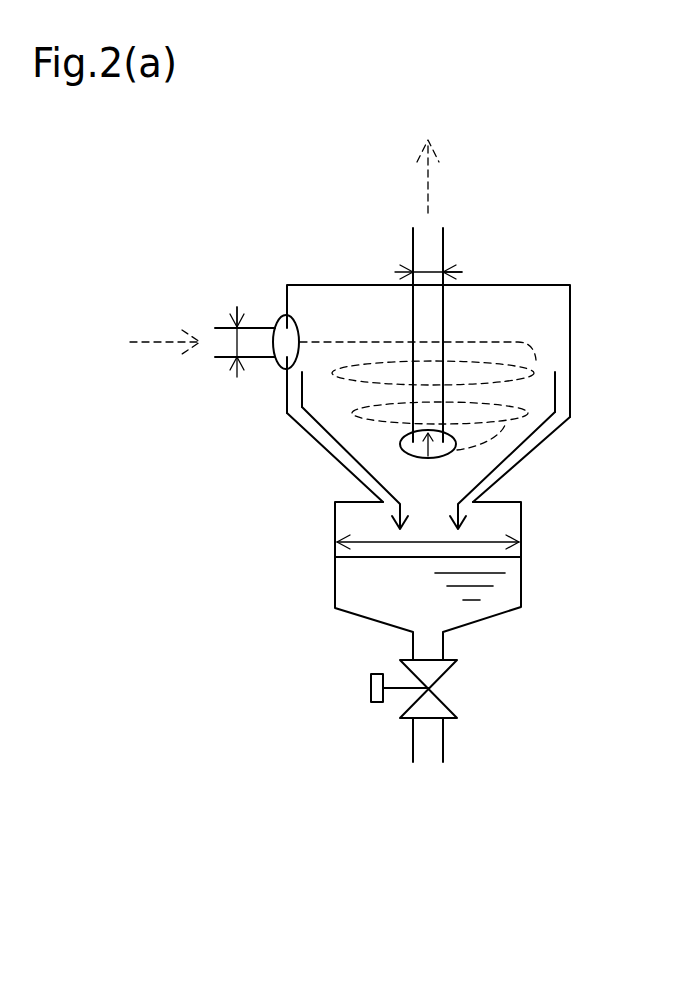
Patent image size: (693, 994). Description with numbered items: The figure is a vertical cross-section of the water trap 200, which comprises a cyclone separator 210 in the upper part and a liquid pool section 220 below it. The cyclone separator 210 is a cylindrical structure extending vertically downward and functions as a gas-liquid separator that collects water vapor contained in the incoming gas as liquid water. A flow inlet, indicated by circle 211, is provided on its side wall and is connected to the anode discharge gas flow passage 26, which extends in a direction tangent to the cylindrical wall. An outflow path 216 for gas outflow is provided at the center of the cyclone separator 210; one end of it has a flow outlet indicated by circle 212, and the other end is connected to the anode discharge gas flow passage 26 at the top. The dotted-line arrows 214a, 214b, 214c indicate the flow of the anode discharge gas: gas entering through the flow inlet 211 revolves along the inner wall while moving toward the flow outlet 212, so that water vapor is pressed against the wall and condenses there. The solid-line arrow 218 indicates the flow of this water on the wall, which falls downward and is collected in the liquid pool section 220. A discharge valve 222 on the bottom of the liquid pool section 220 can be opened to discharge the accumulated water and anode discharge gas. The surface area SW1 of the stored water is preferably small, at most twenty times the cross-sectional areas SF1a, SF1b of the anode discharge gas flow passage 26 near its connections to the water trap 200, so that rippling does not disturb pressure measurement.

The water trap 200 is at (214, 645).
The cyclone separator 210 is at (290, 425).
The flow inlet 211 is at (265, 357).
The flow outlet 212 is at (413, 458).
The arrow indicating flow of anode discharge gas 214a is at (160, 342).
The arrow indicating flow of anode discharge gas 214b is at (520, 352).
The arrow indicating flow of anode discharge gas 214c is at (428, 190).
The outflow path 216 is at (443, 313).
The arrow indicating flow of water on the wall 218 is at (395, 470).
The liquid pool section 220 is at (333, 570).
The discharge valve 222 is at (445, 700).
The anode discharge gas flow passage 26 is at (253, 327).
The cross-sectional area SF1a is at (223, 327).
The cross-sectional area SF1b is at (434, 262).
The surface area of the water SW1 is at (490, 540).